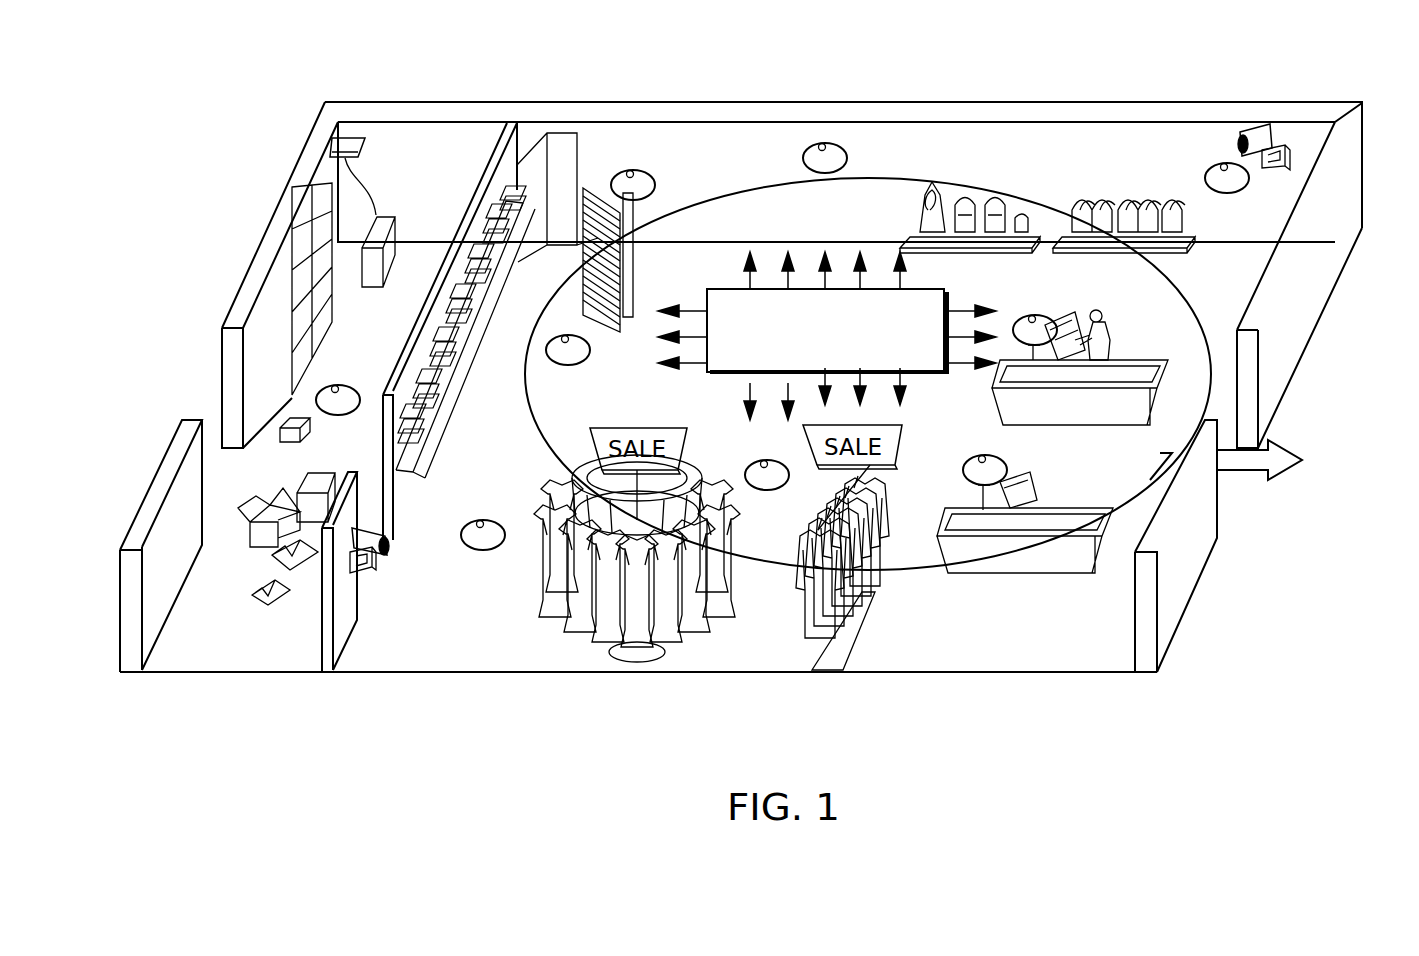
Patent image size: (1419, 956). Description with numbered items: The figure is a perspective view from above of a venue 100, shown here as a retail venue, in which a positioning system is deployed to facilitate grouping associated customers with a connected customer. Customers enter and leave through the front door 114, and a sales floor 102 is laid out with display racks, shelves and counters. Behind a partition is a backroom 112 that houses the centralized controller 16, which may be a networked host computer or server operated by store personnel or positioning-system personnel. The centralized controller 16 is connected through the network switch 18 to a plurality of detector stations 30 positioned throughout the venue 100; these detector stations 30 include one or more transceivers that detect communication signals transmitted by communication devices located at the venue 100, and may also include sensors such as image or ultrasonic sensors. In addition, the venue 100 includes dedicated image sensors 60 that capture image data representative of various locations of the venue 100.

The venue 100 is at (255, 86).
The sales floor 102 is at (393, 674).
The backroom 112 is at (218, 660).
The front door 114 is at (1307, 516).
The centralized controller 16 is at (385, 222).
The network switch 18 is at (366, 150).
The detector station 30 is at (338, 387).
The dedicated image sensor 60 is at (385, 565).